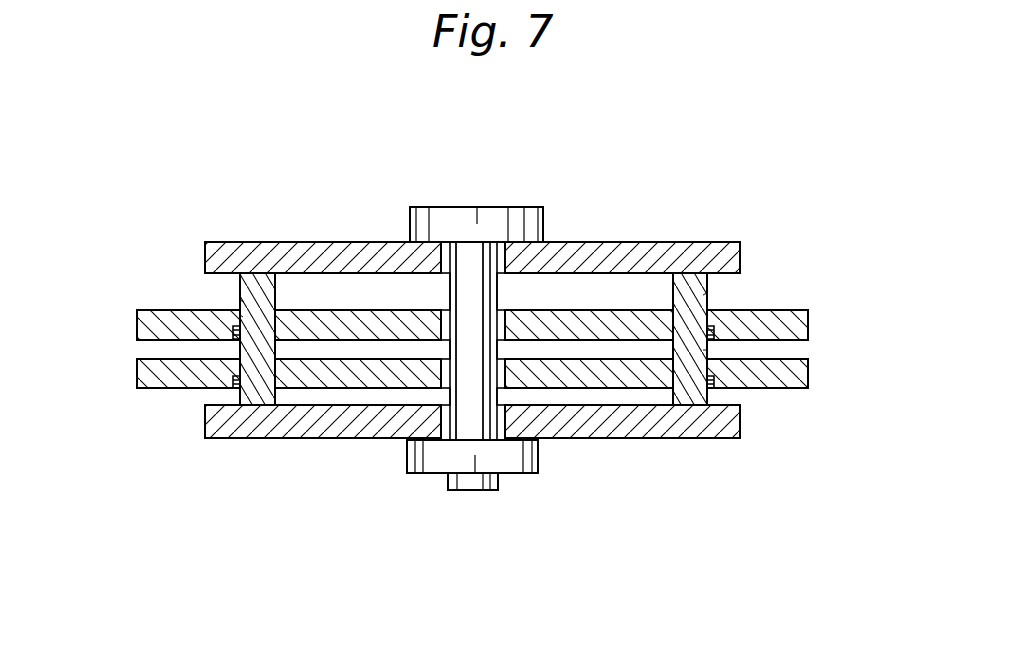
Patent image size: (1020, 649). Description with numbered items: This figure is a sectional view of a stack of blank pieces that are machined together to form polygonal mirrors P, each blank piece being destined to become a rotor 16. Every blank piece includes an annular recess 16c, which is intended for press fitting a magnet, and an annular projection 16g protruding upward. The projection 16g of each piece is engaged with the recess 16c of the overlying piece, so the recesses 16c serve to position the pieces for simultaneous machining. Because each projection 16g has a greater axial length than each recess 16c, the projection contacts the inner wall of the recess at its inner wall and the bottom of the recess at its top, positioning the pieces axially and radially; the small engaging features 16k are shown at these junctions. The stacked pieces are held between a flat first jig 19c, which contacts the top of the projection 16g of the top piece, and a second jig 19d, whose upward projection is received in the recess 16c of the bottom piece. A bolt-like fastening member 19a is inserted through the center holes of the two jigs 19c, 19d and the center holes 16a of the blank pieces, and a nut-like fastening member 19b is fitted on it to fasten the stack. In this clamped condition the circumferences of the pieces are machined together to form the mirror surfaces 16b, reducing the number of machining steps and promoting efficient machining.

The rotor 16 is at (352, 307).
The center hole 16a is at (455, 207).
The mirror surface 16b is at (808, 325).
The annular recess 16c is at (262, 328).
The annular projection 16g is at (238, 315).
The engaging projection 16k is at (237, 345).
The bolt-like fastening member 19a is at (516, 207).
The nut-like fastening member 19b is at (480, 490).
The first jig 19c is at (656, 242).
The second jig 19d is at (656, 440).
The polygonal mirror P is at (570, 309).